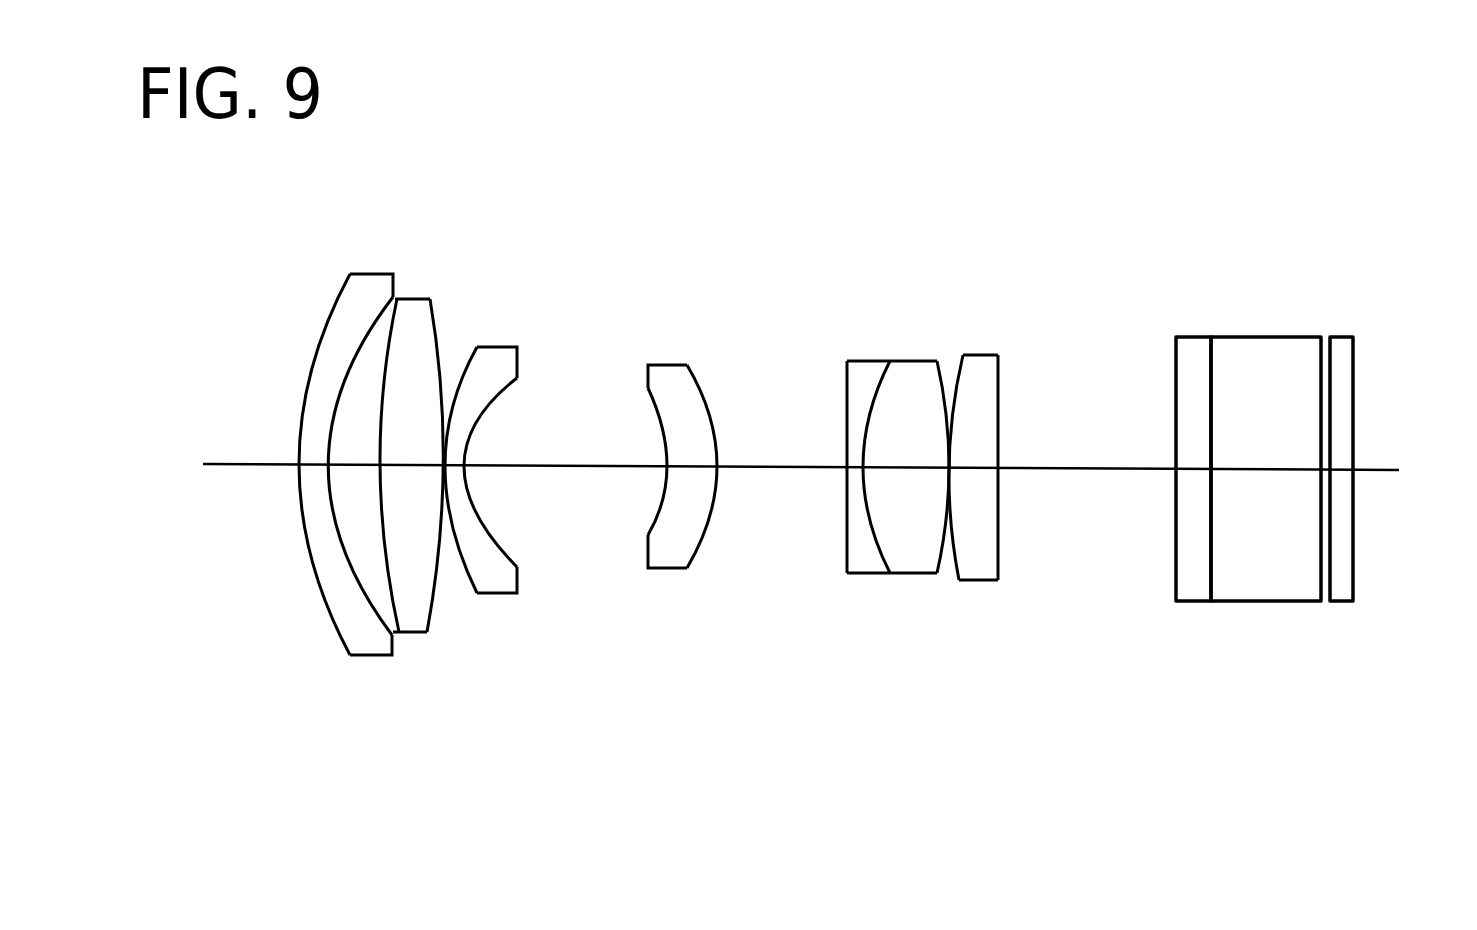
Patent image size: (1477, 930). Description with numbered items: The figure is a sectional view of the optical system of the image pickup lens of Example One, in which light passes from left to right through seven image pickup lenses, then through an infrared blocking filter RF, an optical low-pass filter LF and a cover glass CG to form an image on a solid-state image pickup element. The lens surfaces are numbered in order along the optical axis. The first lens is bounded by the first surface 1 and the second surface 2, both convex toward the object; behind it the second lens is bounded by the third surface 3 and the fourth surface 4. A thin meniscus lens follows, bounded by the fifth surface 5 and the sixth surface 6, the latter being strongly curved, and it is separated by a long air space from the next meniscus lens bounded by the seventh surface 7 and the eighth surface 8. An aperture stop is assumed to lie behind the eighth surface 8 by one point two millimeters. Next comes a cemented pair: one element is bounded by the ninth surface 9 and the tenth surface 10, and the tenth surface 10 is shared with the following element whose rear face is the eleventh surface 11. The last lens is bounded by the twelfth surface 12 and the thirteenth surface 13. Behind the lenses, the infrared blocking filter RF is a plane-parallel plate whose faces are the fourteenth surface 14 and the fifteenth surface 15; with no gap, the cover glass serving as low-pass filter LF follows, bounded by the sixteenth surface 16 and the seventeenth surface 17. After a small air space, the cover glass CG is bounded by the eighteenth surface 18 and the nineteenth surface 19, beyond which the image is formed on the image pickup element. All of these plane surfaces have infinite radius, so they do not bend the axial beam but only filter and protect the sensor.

The first surface 1 is at (337, 635).
The second surface 2 is at (373, 615).
The third surface 3 is at (397, 613).
The fourth surface 4 is at (432, 608).
The fifth surface 5 is at (468, 593).
The sixth surface 6 is at (497, 552).
The seventh surface 7 is at (652, 533).
The eighth surface 8 is at (694, 547).
The ninth surface 9 is at (847, 553).
The tenth surface 10 is at (888, 556).
The eleventh surface 11 is at (935, 558).
The twelfth surface 12 is at (952, 555).
The thirteenth surface 13 is at (998, 558).
The fourteenth surface 14 is at (1176, 578).
The fifteenth surface 15 is at (1211, 583).
The sixteenth surface 16 is at (1211, 565).
The seventeenth surface 17 is at (1320, 562).
The eighteenth surface 18 is at (1330, 565).
The nineteenth surface 19 is at (1353, 580).
The infrared blocking filter RF is at (1192, 337).
The optical low-pass filter LF is at (1277, 337).
The cover glass CG is at (1339, 337).